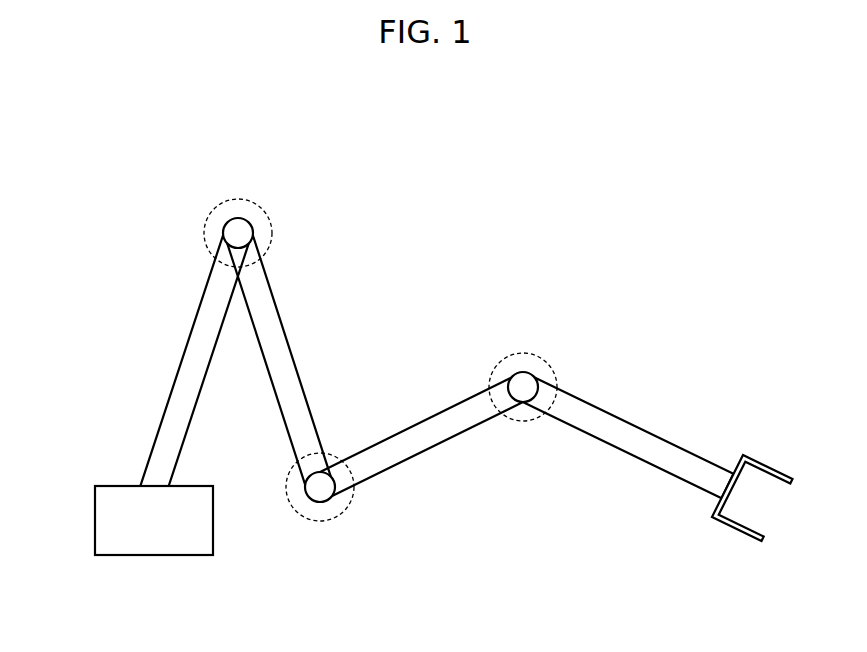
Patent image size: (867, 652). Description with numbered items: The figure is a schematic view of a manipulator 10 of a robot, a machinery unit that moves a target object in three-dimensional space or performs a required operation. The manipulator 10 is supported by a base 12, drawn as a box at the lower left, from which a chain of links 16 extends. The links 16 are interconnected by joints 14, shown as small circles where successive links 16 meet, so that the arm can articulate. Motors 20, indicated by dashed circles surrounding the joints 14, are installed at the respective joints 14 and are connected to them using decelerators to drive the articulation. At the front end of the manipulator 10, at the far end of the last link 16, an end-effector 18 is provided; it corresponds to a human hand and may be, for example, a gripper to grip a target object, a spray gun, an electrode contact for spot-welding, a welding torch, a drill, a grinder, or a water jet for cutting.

The manipulator 10 is at (427, 97).
The base 12 is at (95, 518).
The joints 14 is at (223, 228).
The links 16 is at (178, 368).
The end-effector 18 is at (778, 471).
The motors 20 is at (238, 199).